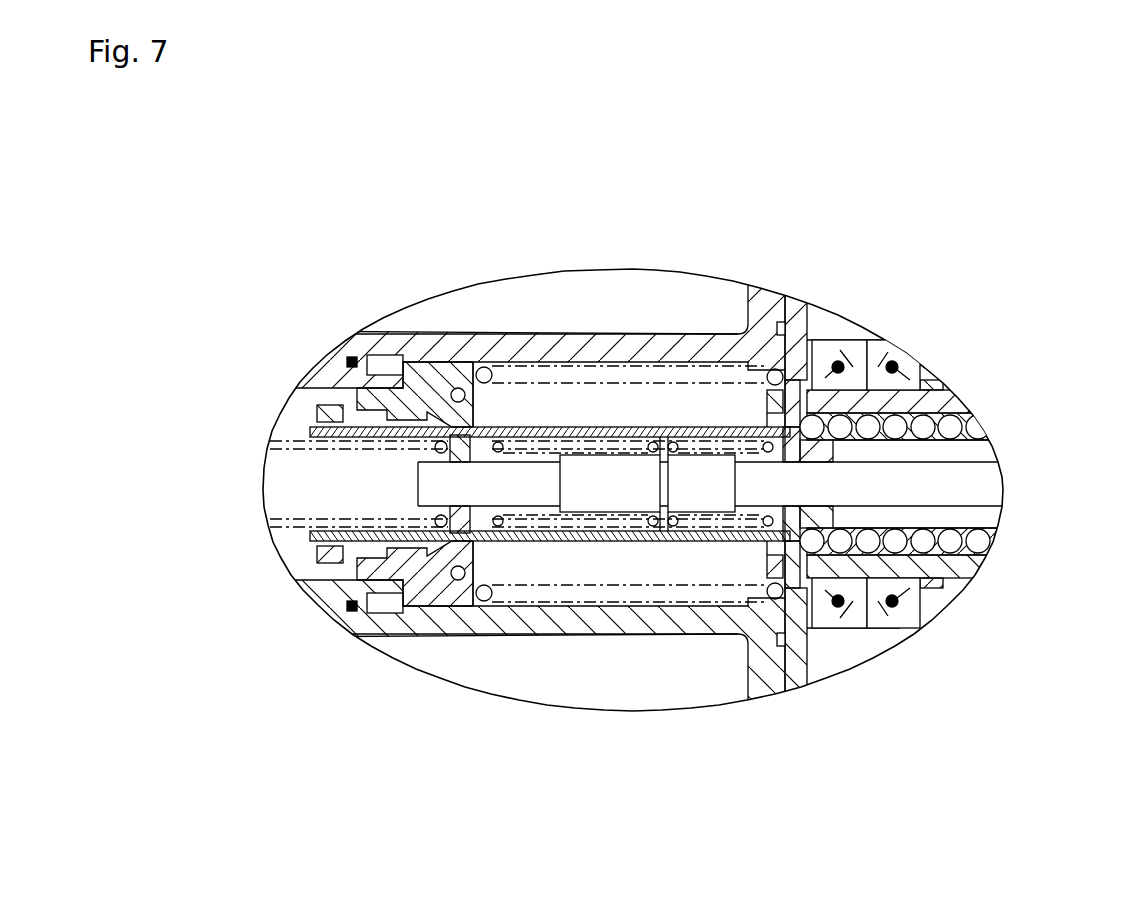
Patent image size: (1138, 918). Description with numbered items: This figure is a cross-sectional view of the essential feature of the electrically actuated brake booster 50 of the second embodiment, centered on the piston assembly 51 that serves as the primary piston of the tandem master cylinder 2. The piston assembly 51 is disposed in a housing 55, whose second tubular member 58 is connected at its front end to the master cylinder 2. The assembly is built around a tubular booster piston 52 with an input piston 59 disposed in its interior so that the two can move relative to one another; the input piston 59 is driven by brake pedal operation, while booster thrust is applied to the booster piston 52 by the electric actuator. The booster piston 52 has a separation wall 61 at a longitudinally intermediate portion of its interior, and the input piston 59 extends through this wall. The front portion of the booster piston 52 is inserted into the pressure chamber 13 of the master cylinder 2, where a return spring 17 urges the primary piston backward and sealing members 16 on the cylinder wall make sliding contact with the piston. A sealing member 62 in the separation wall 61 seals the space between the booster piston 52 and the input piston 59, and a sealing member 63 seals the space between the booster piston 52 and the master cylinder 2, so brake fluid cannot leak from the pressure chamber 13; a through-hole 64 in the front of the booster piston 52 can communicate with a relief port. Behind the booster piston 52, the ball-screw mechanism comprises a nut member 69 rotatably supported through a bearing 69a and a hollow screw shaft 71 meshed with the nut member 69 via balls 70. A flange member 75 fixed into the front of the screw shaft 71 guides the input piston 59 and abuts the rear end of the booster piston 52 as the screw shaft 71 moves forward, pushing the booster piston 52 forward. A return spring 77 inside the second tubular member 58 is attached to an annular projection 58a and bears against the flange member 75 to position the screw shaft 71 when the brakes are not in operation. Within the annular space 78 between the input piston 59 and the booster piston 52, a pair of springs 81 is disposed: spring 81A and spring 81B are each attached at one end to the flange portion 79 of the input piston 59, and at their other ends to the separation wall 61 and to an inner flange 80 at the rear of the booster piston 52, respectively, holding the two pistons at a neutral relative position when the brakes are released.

The tandem master cylinder 2 is at (320, 607).
The pressure chamber 13 is at (290, 488).
The sealing members 16 is at (337, 403).
The return spring 17 is at (266, 523).
The electrically actuated brake booster 50 is at (627, 466).
The piston assembly 51 is at (570, 425).
The booster piston 52 is at (653, 537).
The housing 55 is at (515, 333).
The second tubular member 58 is at (608, 633).
The annular projection 58a is at (452, 353).
The input piston 59 is at (967, 490).
The separation wall 61 is at (447, 417).
The sealing member 62 is at (493, 545).
The sealing member 63 is at (467, 573).
The through-hole 64 is at (312, 458).
The nut member 69 is at (955, 402).
The bearing 69a is at (905, 356).
The balls 70 is at (980, 549).
The screw shaft 71 is at (985, 437).
The flange member 75 is at (796, 300).
The return spring 77 is at (553, 592).
The annular space 78 is at (776, 600).
The flange portion 79 is at (670, 492).
The inner flange 80 is at (810, 545).
The springs 81 is at (647, 324).
The spring 81A is at (603, 440).
The spring 81B is at (706, 440).